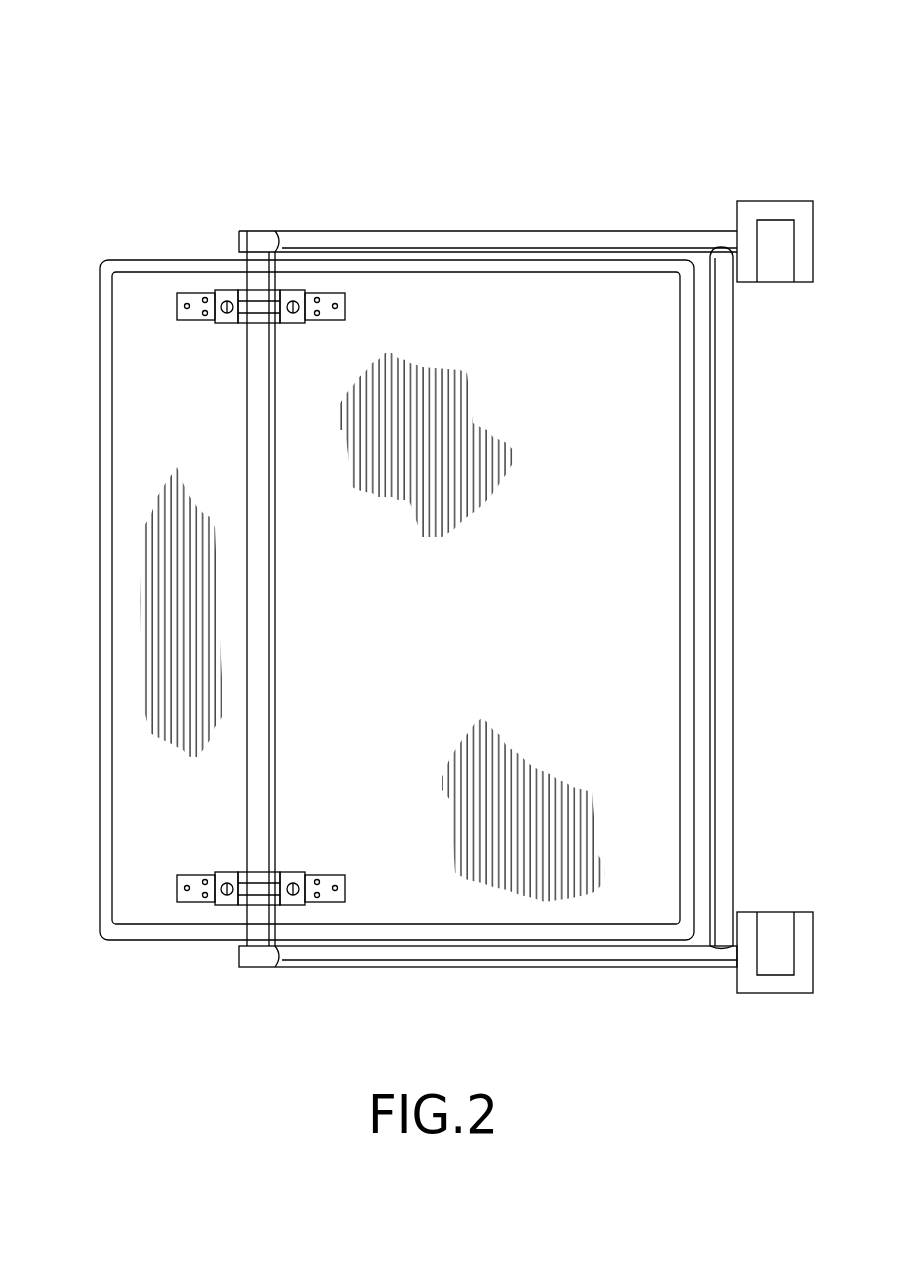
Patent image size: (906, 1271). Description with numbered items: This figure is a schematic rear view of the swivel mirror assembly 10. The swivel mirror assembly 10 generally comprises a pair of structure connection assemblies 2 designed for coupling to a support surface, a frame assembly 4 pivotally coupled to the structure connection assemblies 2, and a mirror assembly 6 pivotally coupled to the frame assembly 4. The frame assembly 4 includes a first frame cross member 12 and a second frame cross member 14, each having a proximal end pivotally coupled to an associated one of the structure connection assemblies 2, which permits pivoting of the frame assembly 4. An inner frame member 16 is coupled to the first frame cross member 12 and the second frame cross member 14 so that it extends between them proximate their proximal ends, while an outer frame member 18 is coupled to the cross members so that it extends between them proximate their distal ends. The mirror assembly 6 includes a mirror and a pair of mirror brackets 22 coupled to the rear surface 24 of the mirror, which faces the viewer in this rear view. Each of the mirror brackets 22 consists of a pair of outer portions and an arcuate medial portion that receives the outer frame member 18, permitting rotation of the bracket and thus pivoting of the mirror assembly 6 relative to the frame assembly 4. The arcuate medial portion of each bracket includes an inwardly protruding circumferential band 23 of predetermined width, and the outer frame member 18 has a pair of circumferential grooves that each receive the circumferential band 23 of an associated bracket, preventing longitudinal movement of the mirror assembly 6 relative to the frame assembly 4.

The swivel mirror assembly 10 is at (300, 92).
The structure connection assemblies 2 is at (737, 201).
The frame assembly 4 is at (578, 231).
The mirror assembly 6 is at (103, 940).
The first frame cross member 12 is at (510, 953).
The second frame cross member 14 is at (488, 186).
The inner frame member 16 is at (718, 567).
The outer frame member 18 is at (253, 750).
The mirror brackets 22 is at (213, 292).
The circumferential band 23 is at (260, 305).
The rear surface 24 is at (460, 860).